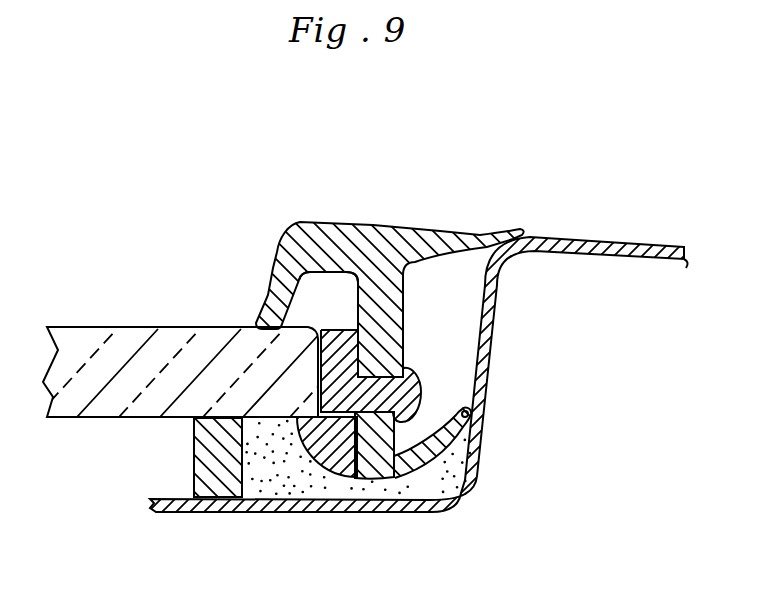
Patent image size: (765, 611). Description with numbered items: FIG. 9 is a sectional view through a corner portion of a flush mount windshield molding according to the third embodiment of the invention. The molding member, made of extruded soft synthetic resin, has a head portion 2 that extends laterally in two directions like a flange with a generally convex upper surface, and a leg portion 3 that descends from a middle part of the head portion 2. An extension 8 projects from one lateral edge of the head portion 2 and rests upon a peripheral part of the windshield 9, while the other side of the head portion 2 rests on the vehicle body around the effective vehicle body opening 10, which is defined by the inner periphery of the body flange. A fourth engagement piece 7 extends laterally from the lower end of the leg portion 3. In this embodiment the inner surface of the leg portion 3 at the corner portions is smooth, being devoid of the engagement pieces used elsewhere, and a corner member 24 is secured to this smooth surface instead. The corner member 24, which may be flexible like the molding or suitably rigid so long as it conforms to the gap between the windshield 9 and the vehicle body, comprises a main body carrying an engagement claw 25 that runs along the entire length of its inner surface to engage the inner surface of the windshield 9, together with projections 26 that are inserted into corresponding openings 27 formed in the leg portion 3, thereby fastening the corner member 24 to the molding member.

The head portion 2 is at (398, 229).
The leg portion 3 is at (403, 318).
The fourth engagement piece 7 is at (447, 446).
The extension 8 is at (268, 282).
The windshield 9 is at (140, 328).
The vehicle body opening 10 is at (150, 500).
The corner member 24 is at (338, 325).
The engagement claw 25 is at (290, 418).
The projections 26 is at (421, 390).
The openings 27 is at (370, 478).